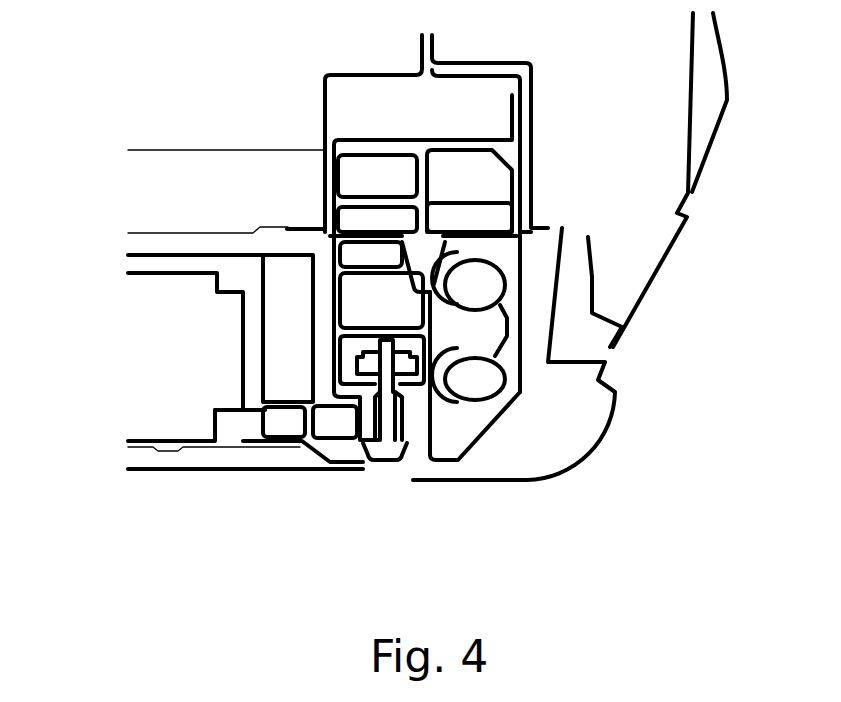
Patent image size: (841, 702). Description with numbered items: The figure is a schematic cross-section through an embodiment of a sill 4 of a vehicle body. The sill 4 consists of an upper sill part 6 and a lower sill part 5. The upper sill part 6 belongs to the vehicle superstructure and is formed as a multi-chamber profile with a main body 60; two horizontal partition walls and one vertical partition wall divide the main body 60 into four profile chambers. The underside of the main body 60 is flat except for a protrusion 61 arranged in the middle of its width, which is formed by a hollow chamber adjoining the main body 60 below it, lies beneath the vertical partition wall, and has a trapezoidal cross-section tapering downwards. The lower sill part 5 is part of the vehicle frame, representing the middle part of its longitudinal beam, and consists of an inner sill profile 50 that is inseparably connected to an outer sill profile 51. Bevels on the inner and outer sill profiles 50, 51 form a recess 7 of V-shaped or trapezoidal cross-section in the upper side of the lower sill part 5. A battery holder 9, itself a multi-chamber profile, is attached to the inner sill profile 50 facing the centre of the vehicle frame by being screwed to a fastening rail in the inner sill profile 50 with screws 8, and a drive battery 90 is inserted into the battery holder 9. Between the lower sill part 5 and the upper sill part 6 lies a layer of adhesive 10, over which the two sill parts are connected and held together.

The sill 4 is at (300, 126).
The lower sill part 5 is at (540, 410).
The upper sill part 6 is at (306, 183).
The recess 7 is at (417, 253).
The screws 8 is at (384, 447).
The battery holder 9 is at (337, 422).
The layer of adhesive 10 is at (360, 255).
The inner sill profile 50 is at (333, 303).
The outer sill profile 51 is at (487, 427).
The main body 60 is at (484, 184).
The protrusion 61 is at (467, 243).
The drive battery 90 is at (182, 407).